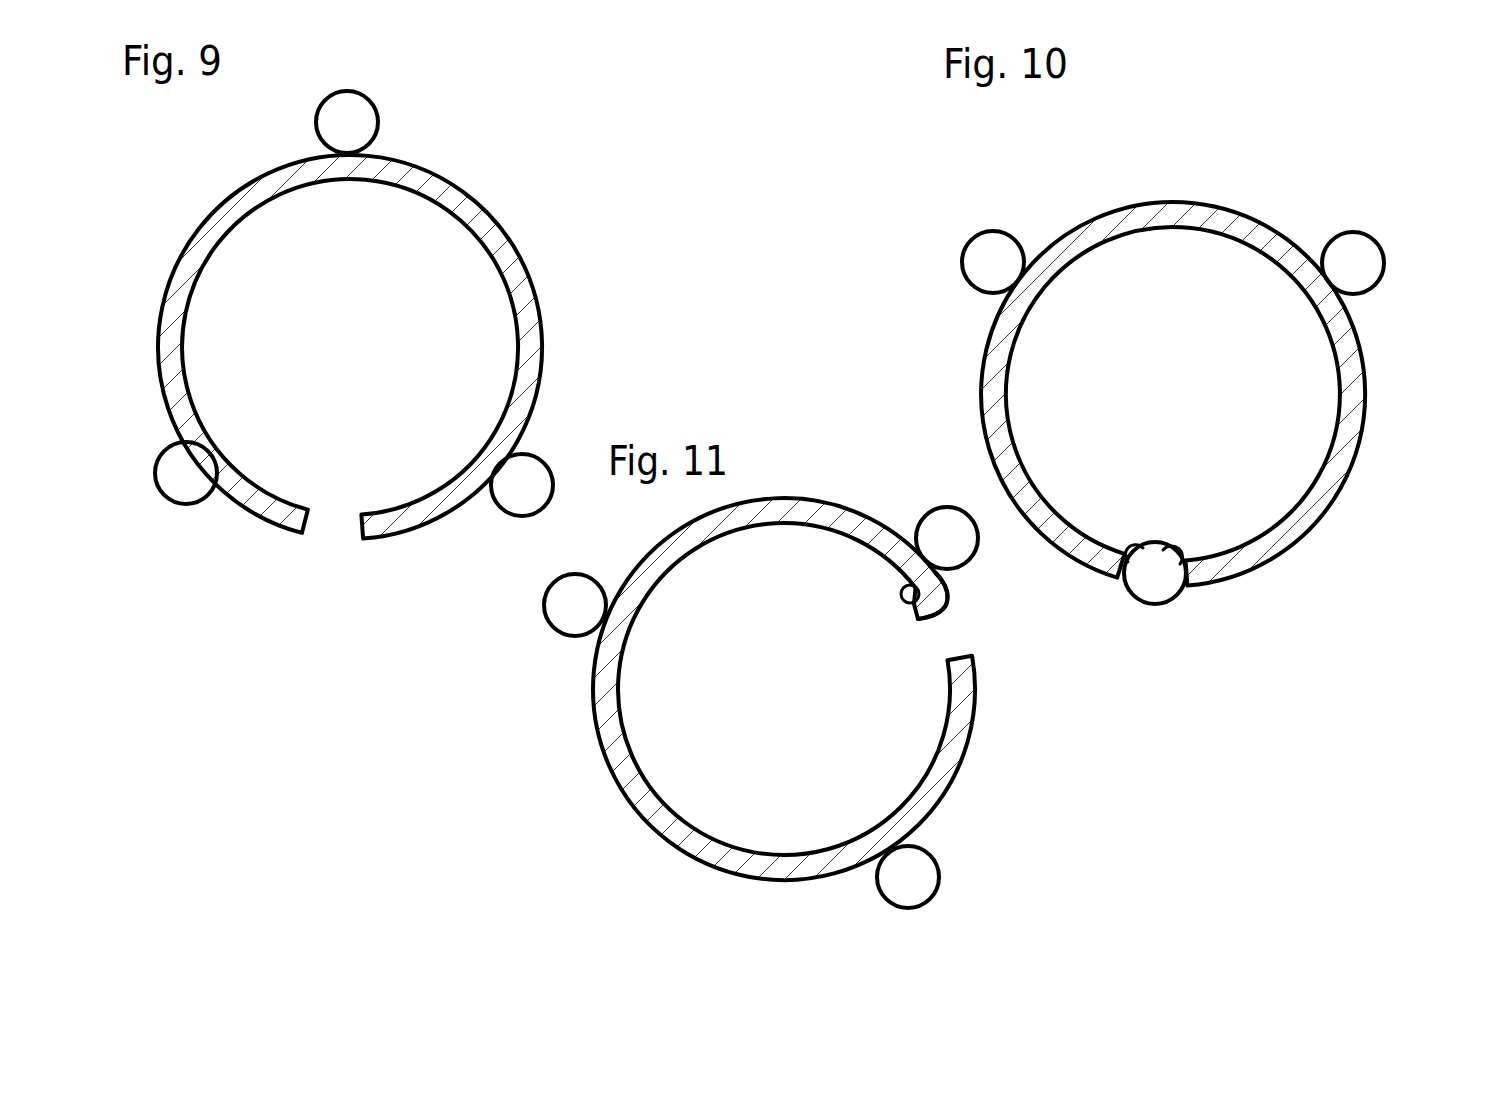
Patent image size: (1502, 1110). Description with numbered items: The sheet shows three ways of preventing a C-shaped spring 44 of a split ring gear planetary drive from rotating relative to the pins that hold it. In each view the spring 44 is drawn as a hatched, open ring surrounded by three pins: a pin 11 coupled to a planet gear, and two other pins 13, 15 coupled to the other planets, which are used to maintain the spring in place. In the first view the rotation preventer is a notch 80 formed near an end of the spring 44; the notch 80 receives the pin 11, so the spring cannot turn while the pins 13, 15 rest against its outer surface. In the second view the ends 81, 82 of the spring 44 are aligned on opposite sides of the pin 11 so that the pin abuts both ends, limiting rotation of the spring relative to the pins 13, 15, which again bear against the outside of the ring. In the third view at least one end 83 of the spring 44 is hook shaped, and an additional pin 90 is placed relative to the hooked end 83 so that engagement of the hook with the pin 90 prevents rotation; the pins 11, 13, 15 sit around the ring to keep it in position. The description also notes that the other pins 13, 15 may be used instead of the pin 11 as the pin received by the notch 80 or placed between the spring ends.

In FIG. 9, the spring 44 is at (497, 212).
In FIG. 10, the spring 44 is at (1184, 152).
In FIG. 11, the spring 44 is at (958, 775).
In FIG. 9, the pin 11 is at (193, 500).
In FIG. 10, the pin 11 is at (1167, 605).
In FIG. 11, the pin 11 is at (939, 873).
In FIG. 9, the pin 13 is at (333, 113).
In FIG. 10, the pin 13 is at (987, 233).
In FIG. 11, the pin 13 is at (553, 627).
In FIG. 9, the pin 15 is at (532, 454).
In FIG. 10, the pin 15 is at (1379, 246).
In FIG. 11, the pin 15 is at (975, 554).
In FIG. 9, the notch 80 is at (208, 455).
In FIG. 10, the end of the C-shaped spring 81 is at (1143, 540).
In FIG. 10, the end of the C-shaped spring 82 is at (1167, 553).
In FIG. 11, the hooked end 83 is at (913, 617).
In FIG. 11, the additional pin 90 is at (901, 596).